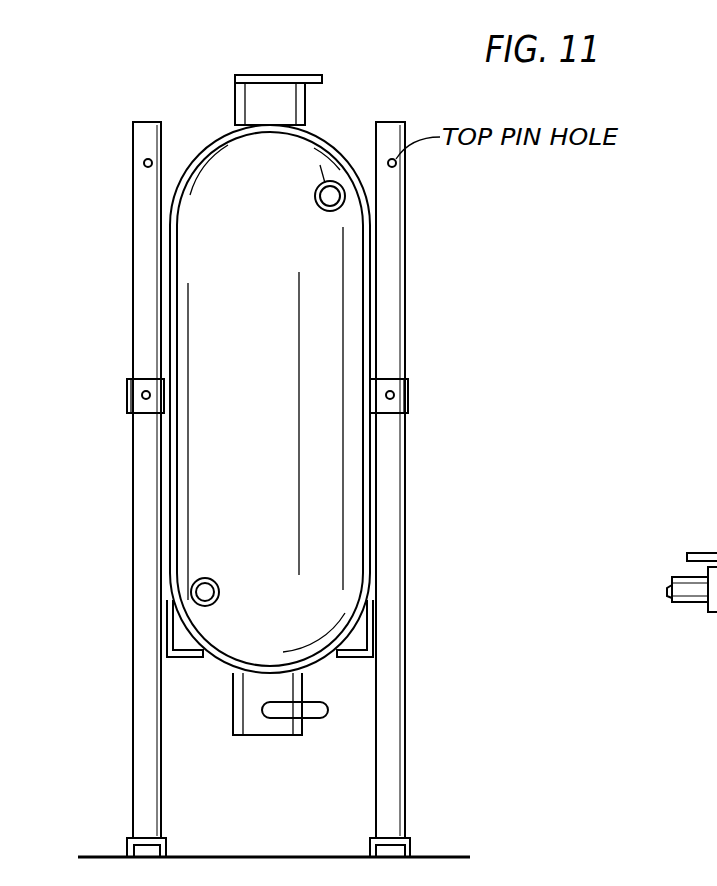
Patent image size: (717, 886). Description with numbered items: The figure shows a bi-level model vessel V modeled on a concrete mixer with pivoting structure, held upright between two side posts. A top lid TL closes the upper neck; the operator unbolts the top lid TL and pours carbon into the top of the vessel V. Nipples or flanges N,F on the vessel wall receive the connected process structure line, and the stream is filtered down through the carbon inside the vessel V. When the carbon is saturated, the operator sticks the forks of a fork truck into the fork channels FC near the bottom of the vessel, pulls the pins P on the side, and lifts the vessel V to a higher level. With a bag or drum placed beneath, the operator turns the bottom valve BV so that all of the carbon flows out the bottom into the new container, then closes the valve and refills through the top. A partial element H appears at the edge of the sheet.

The top lid TL is at (283, 75).
The nipple or flange N,F is at (343, 207).
The vessel V is at (357, 307).
The pin P is at (394, 395).
The fork channels FC is at (367, 652).
The bottom valve BV is at (300, 722).
The partial element at sheet edge H is at (692, 639).